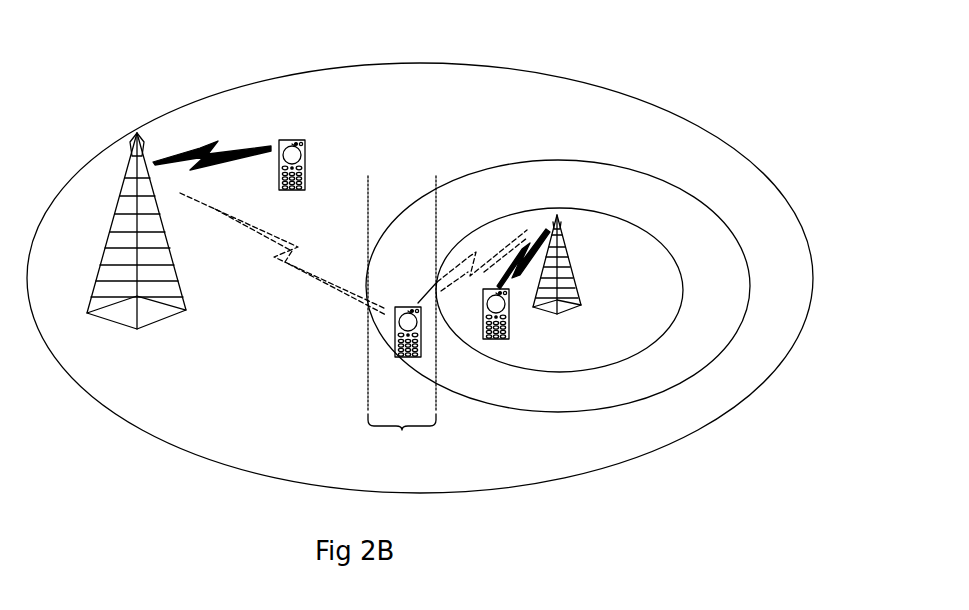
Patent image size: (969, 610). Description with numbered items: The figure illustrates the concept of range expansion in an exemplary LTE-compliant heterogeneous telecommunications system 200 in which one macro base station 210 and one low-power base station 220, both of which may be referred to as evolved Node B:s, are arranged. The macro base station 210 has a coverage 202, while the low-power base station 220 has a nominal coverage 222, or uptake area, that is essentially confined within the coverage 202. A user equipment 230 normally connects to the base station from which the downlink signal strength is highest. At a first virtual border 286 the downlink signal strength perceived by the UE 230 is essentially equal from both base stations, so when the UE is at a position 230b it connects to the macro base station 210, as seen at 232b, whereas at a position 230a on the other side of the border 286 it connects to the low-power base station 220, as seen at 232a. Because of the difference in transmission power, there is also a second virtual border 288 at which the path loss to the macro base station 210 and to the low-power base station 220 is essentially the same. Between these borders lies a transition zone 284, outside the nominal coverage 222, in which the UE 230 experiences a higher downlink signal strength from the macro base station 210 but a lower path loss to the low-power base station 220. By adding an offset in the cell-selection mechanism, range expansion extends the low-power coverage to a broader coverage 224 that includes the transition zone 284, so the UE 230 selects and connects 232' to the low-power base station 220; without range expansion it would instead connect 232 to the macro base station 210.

The heterogeneous telecommunications system 200 is at (146, 92).
The coverage of the macro base station 202 is at (590, 84).
The macro base station 210 is at (234, 348).
The low-power base station 220 is at (567, 290).
The nominal coverage of the low-power base station 222 is at (633, 223).
The broader coverage 224 is at (587, 162).
The user equipment 230 is at (421, 348).
The position of the UE on the low-power side of the first virtual border 230a is at (509, 332).
The position of the UE on the macro side of the first virtual border 230b is at (300, 141).
The connection to the macro base station without range expansion 232 is at (283, 270).
The connection to the low-power base station with range expansion 232' is at (472, 239).
The connection to the low-power base station 232a is at (530, 240).
The connection to the macro base station 232b is at (206, 146).
The transition zone 284 is at (419, 455).
The first virtual border 286 is at (432, 283).
The second virtual border 288 is at (368, 283).